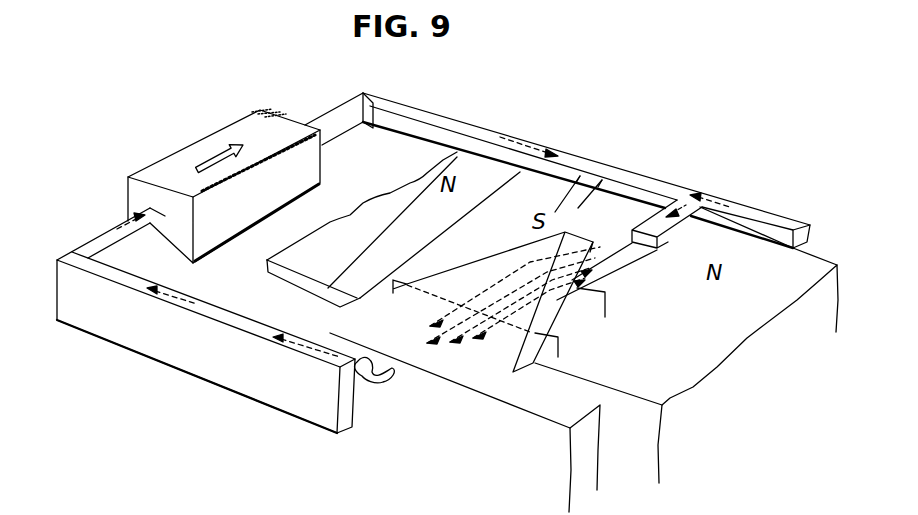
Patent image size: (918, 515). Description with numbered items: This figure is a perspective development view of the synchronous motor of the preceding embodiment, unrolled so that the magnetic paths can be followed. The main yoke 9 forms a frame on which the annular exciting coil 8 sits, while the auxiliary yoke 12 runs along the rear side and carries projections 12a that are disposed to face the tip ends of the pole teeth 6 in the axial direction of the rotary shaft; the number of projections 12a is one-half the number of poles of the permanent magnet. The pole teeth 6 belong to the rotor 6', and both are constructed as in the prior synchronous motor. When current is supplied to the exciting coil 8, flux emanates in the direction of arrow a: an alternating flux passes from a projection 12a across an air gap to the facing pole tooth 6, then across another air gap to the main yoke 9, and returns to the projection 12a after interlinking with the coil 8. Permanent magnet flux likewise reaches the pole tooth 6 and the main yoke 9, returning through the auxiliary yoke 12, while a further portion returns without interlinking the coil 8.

The annular exciting coil 8 is at (233, 133).
The arrow indicating flux direction a is at (210, 156).
The main yoke 9 is at (127, 333).
The pole teeth 6 is at (525, 301).
The rotor 6' is at (362, 229).
The auxiliary yoke 12 is at (738, 210).
The projections 12a is at (660, 228).